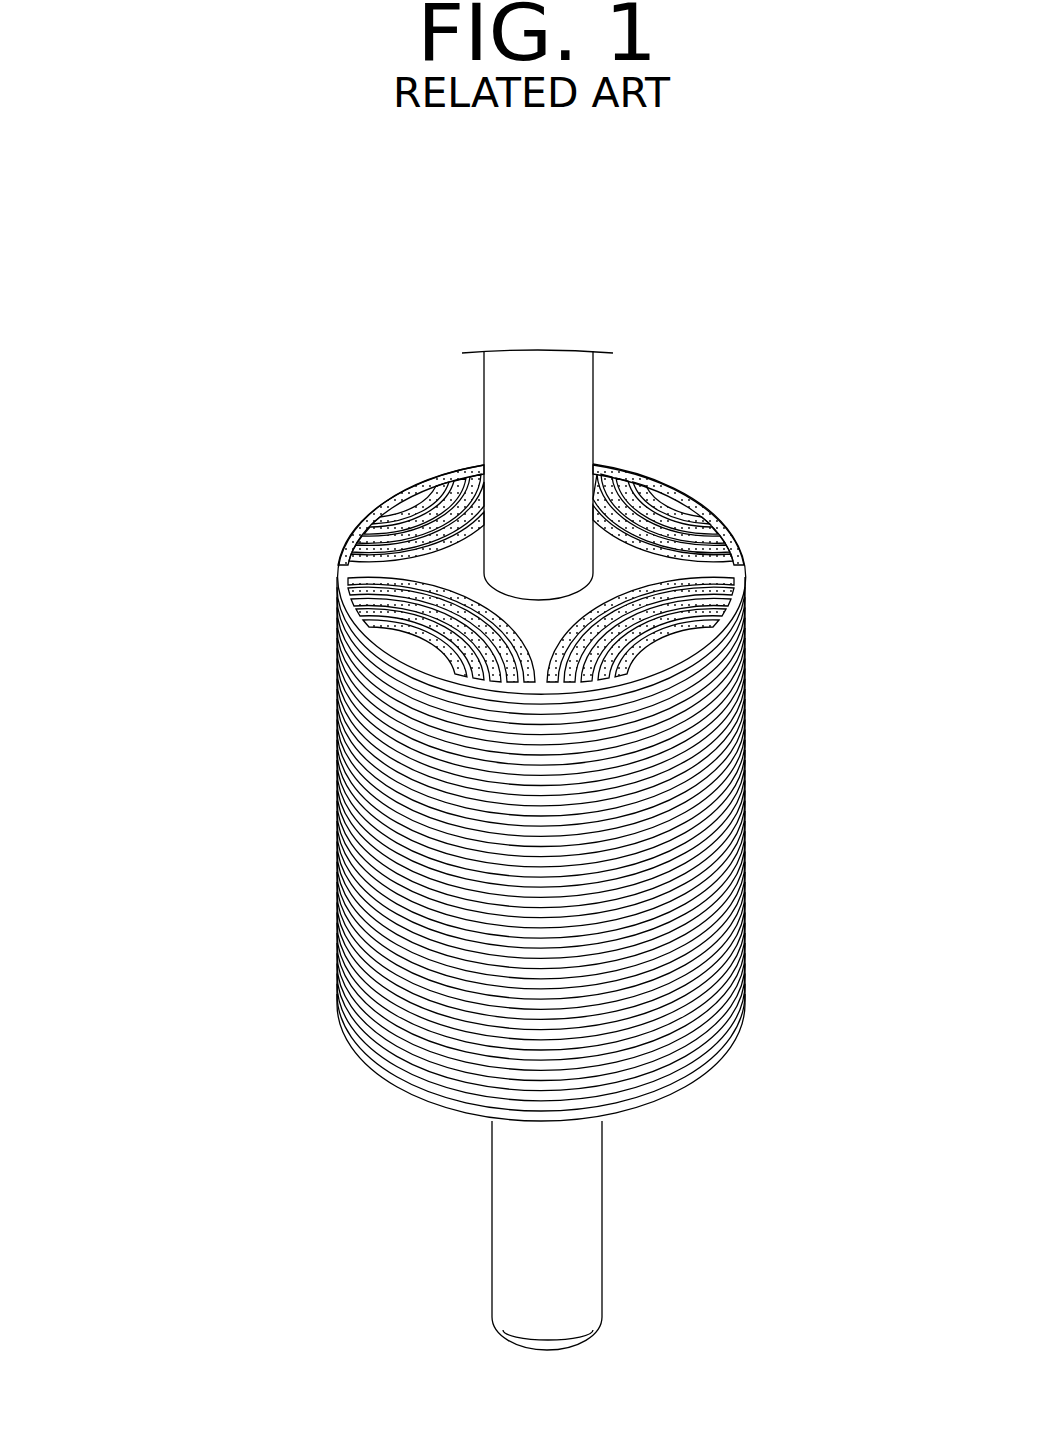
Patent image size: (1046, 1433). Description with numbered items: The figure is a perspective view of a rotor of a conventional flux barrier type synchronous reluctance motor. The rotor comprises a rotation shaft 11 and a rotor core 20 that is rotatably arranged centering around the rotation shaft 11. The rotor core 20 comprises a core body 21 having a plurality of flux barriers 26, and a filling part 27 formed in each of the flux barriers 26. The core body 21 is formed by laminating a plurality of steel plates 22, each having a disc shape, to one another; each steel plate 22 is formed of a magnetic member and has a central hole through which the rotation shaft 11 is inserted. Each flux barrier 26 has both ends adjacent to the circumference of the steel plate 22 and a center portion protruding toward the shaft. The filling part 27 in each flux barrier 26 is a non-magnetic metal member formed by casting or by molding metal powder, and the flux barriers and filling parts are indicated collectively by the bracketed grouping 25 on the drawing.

The rotation shaft 11 is at (572, 1195).
The rotor core 20 is at (252, 815).
The core body 21 is at (880, 683).
The steel plate 22 is at (680, 655).
The coils 25 is at (324, 621).
The flux barrier 26 is at (641, 472).
The filling part 27 is at (405, 643).